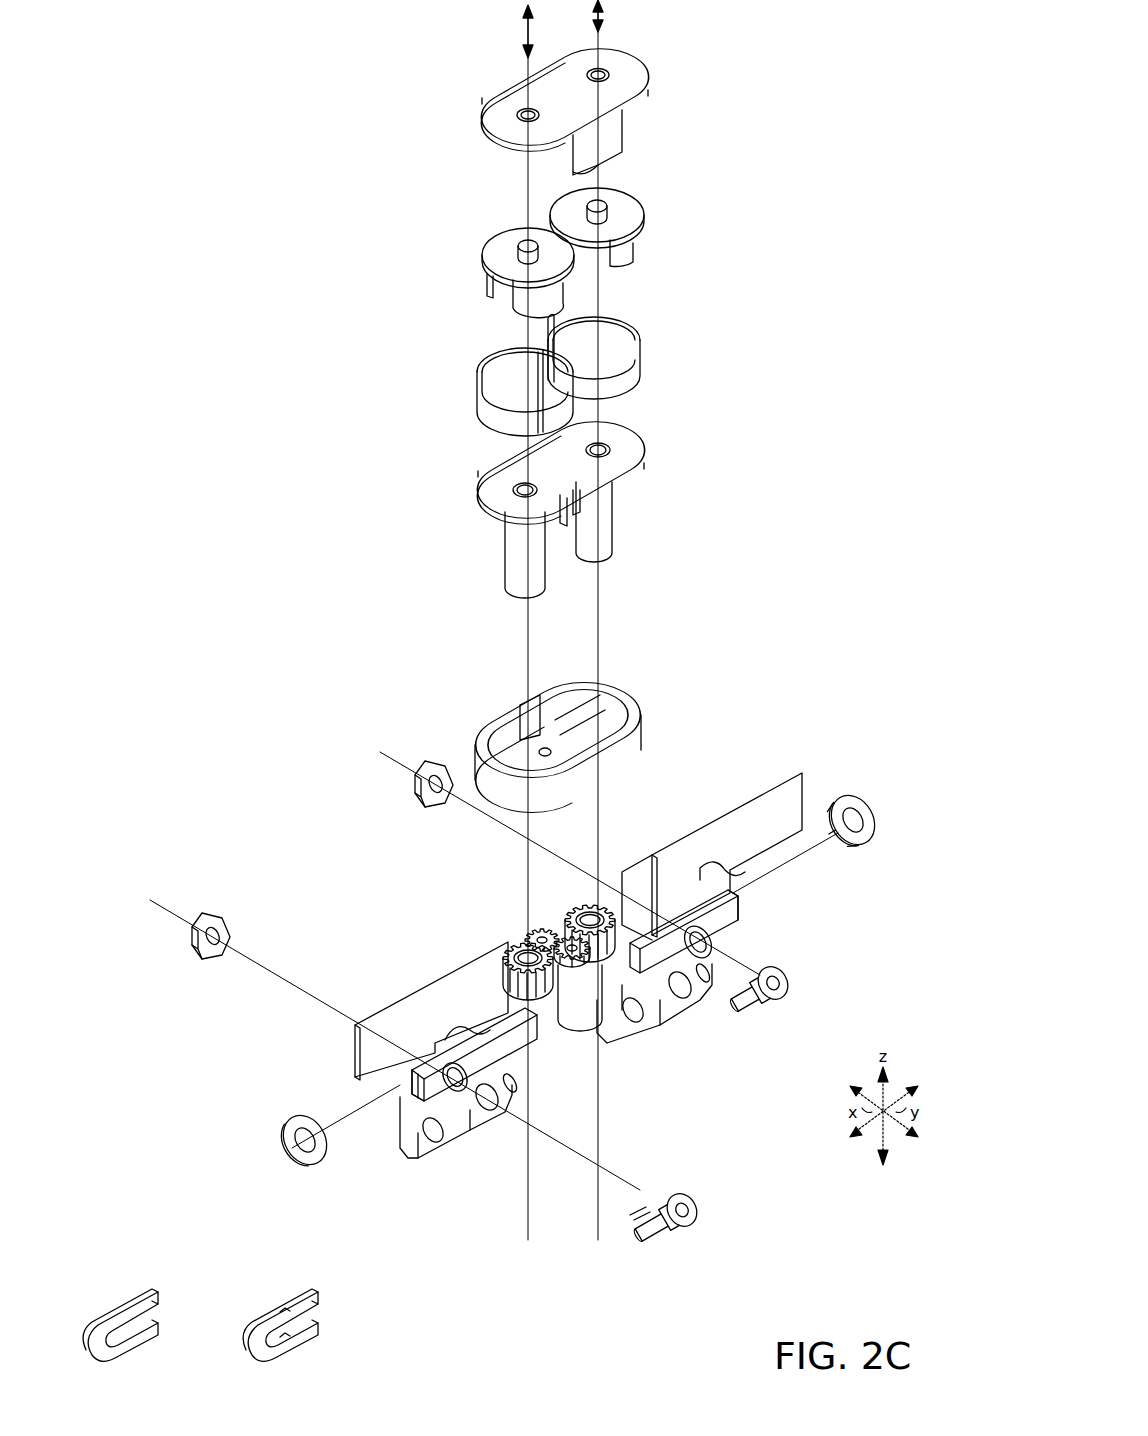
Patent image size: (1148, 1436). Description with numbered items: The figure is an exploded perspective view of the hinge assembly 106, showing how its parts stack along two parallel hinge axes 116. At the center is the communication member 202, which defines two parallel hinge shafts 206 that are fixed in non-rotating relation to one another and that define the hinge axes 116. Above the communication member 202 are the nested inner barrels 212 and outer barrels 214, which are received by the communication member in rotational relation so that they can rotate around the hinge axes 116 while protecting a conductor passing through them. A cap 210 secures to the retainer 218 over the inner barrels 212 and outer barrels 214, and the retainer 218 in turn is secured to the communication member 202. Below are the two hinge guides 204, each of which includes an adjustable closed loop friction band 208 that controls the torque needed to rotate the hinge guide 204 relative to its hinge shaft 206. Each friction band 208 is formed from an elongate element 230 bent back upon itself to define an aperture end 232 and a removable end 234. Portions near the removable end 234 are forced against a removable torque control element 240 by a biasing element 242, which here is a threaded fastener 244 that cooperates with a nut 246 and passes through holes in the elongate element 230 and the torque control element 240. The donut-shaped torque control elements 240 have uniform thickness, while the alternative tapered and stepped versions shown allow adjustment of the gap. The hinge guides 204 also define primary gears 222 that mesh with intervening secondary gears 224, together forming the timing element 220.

The hinge assembly 106 is at (292, 72).
The hinge axis 116 is at (658, 12).
The cap 210 is at (487, 103).
The inner barrel 212 is at (483, 248).
The outer barrel 214 is at (673, 385).
The communication member 202 is at (488, 491).
The hinge shaft 206 is at (696, 503).
The retainer 218 is at (622, 686).
The nut 246 is at (424, 764).
The removable torque control element 240 is at (120, 1275).
The timing element 220 is at (524, 914).
The primary gear 222 is at (517, 946).
The secondary gear 224 is at (535, 932).
The hinge guide 204 is at (760, 888).
The removable end 234 is at (738, 940).
The adjustable closed loop friction band 208 is at (742, 946).
The elongate element 230 is at (652, 1062).
The aperture end 232 is at (612, 1022).
The threaded fastener 244 is at (790, 985).
The biasing element 242 is at (638, 1230).